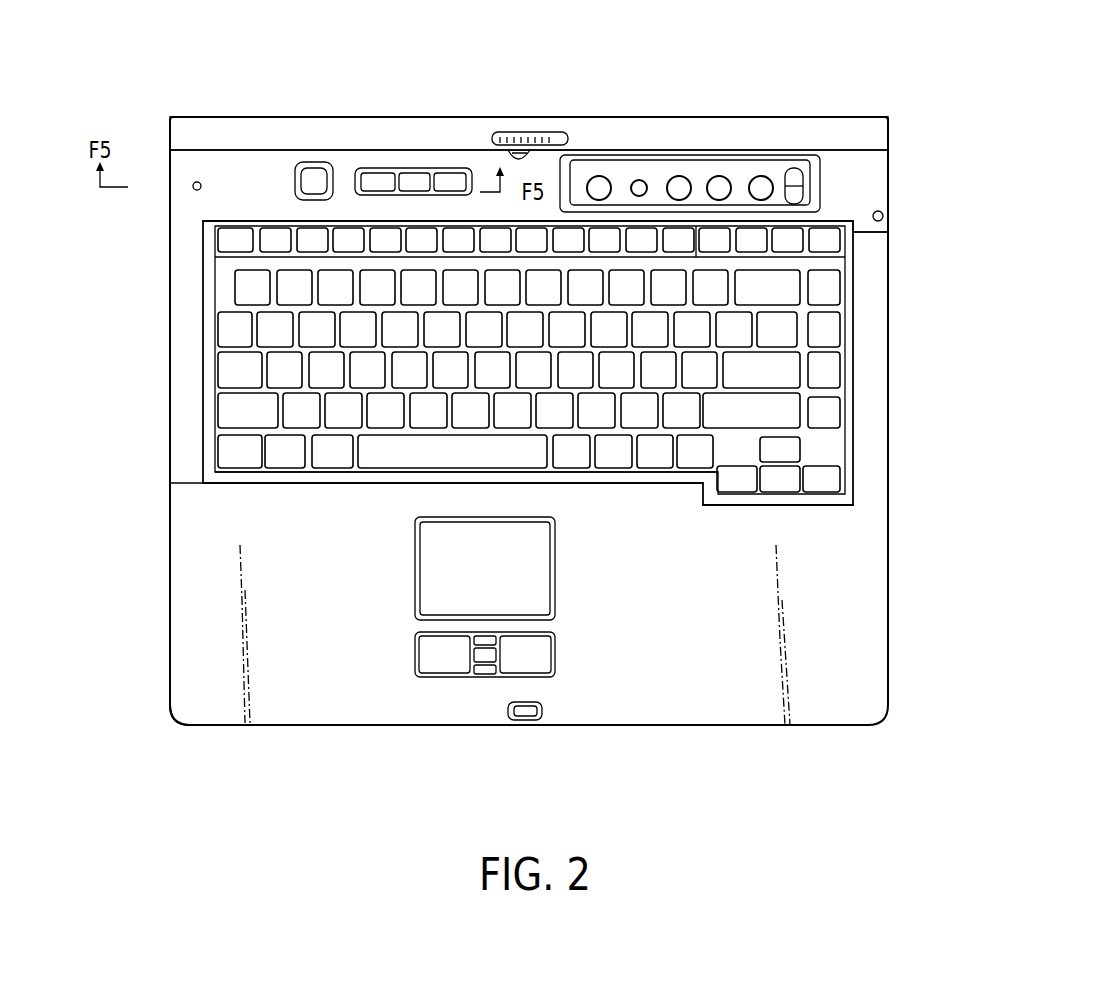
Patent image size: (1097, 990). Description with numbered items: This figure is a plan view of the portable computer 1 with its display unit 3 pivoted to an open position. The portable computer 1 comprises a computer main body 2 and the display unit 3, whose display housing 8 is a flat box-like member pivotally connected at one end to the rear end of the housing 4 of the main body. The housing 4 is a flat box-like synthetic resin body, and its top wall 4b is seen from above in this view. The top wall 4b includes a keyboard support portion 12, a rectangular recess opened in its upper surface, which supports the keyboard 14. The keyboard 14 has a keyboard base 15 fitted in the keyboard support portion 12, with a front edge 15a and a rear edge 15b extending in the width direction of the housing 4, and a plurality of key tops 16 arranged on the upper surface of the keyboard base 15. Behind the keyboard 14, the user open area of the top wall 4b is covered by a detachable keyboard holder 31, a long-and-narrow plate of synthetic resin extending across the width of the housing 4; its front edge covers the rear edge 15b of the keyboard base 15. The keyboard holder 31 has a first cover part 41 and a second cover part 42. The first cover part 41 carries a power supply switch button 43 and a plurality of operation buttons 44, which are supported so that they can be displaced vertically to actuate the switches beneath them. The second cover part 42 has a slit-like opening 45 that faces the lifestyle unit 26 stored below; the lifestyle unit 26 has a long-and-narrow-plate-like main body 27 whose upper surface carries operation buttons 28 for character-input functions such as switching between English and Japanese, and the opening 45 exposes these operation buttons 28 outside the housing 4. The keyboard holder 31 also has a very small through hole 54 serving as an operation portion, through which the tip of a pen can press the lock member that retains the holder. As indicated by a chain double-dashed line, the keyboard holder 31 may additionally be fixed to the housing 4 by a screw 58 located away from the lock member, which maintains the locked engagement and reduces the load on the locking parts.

The portable computer 1 is at (842, 84).
The computer main body 2 is at (184, 729).
The display unit 3 is at (261, 108).
The housing 4 is at (634, 728).
The top wall 4b is at (190, 563).
The display housing 8 is at (193, 128).
The keyboard support portion 12 is at (213, 361).
The keyboard 14 is at (336, 460).
The keyboard base 15 is at (825, 455).
The front edge 15a is at (410, 472).
The rear edge 15b is at (252, 228).
The key tops 16 is at (700, 448).
The lifestyle unit 26 is at (611, 165).
The main body 27 is at (666, 172).
The operation buttons 28 is at (762, 170).
The keyboard holder 31 is at (861, 168).
The first cover part 41 is at (280, 165).
The second cover part 42 is at (865, 185).
The power supply switch button 43 is at (318, 178).
The operation buttons 44 is at (452, 182).
The opening 45 is at (778, 160).
The through hole 54 is at (196, 183).
The screw 58 is at (884, 214).